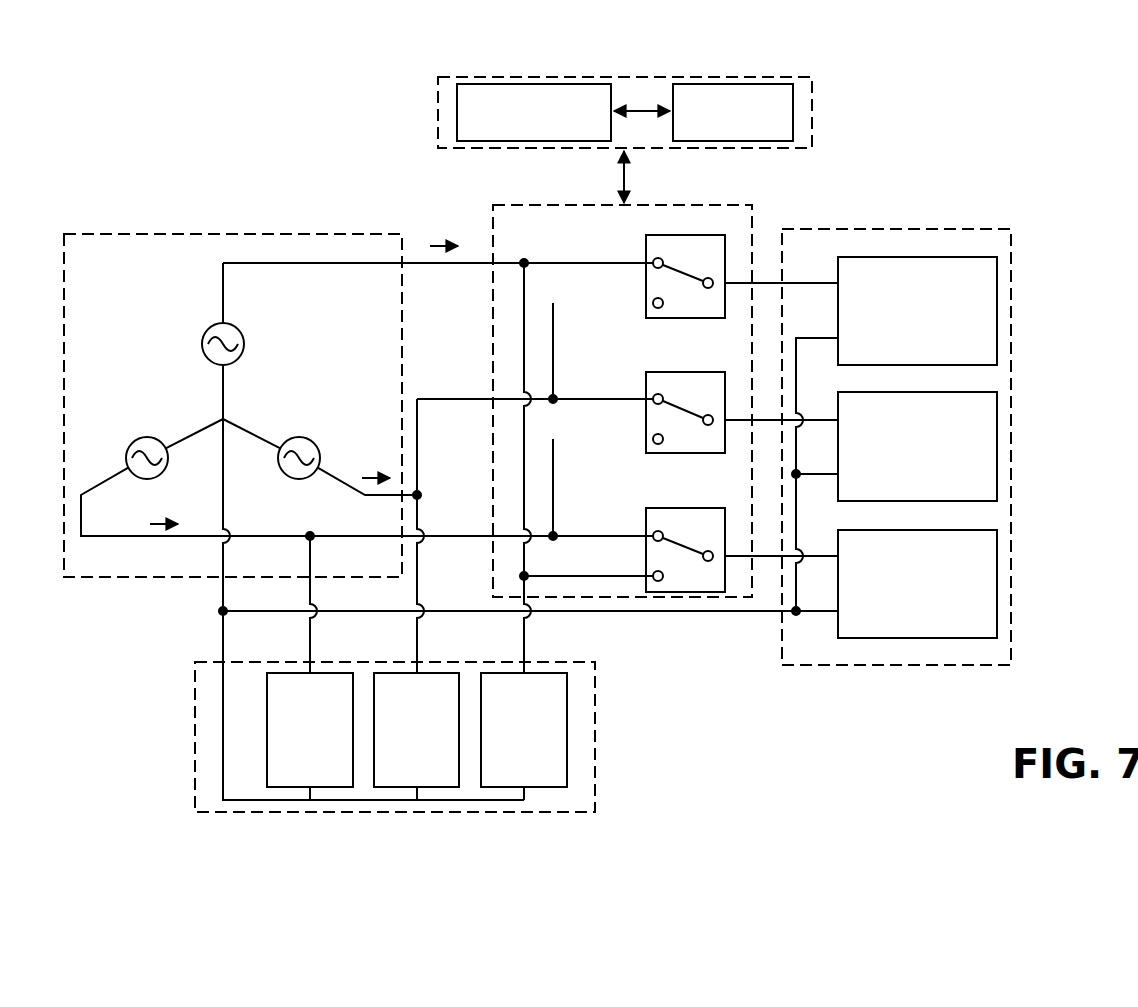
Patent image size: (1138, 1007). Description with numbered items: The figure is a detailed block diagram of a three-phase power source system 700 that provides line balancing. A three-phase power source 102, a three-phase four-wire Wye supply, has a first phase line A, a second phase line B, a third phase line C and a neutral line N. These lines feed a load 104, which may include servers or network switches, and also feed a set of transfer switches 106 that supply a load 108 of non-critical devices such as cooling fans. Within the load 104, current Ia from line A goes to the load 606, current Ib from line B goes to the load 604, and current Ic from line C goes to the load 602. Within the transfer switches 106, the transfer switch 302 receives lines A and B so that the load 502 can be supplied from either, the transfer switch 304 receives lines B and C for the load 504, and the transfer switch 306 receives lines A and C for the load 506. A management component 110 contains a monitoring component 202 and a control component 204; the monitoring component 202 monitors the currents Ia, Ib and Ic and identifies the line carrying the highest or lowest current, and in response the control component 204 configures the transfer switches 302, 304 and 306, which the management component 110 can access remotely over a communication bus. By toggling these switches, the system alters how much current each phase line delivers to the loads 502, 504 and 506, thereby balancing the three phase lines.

The system 700 is at (1052, 80).
The management component 110 is at (760, 77).
The monitoring component 202 is at (534, 112).
The control component 204 is at (733, 112).
The three-phase power source 102 is at (335, 234).
The transfer switches 106 is at (718, 205).
The transfer switch 302 is at (676, 276).
The transfer switch 304 is at (676, 412).
The transfer switch 306 is at (676, 550).
The load 108 is at (985, 229).
The load 502 is at (917, 311).
The load 504 is at (917, 446).
The load 506 is at (917, 584).
The load 104 is at (570, 662).
The load 602 is at (310, 730).
The load 604 is at (416, 730).
The load 606 is at (524, 730).